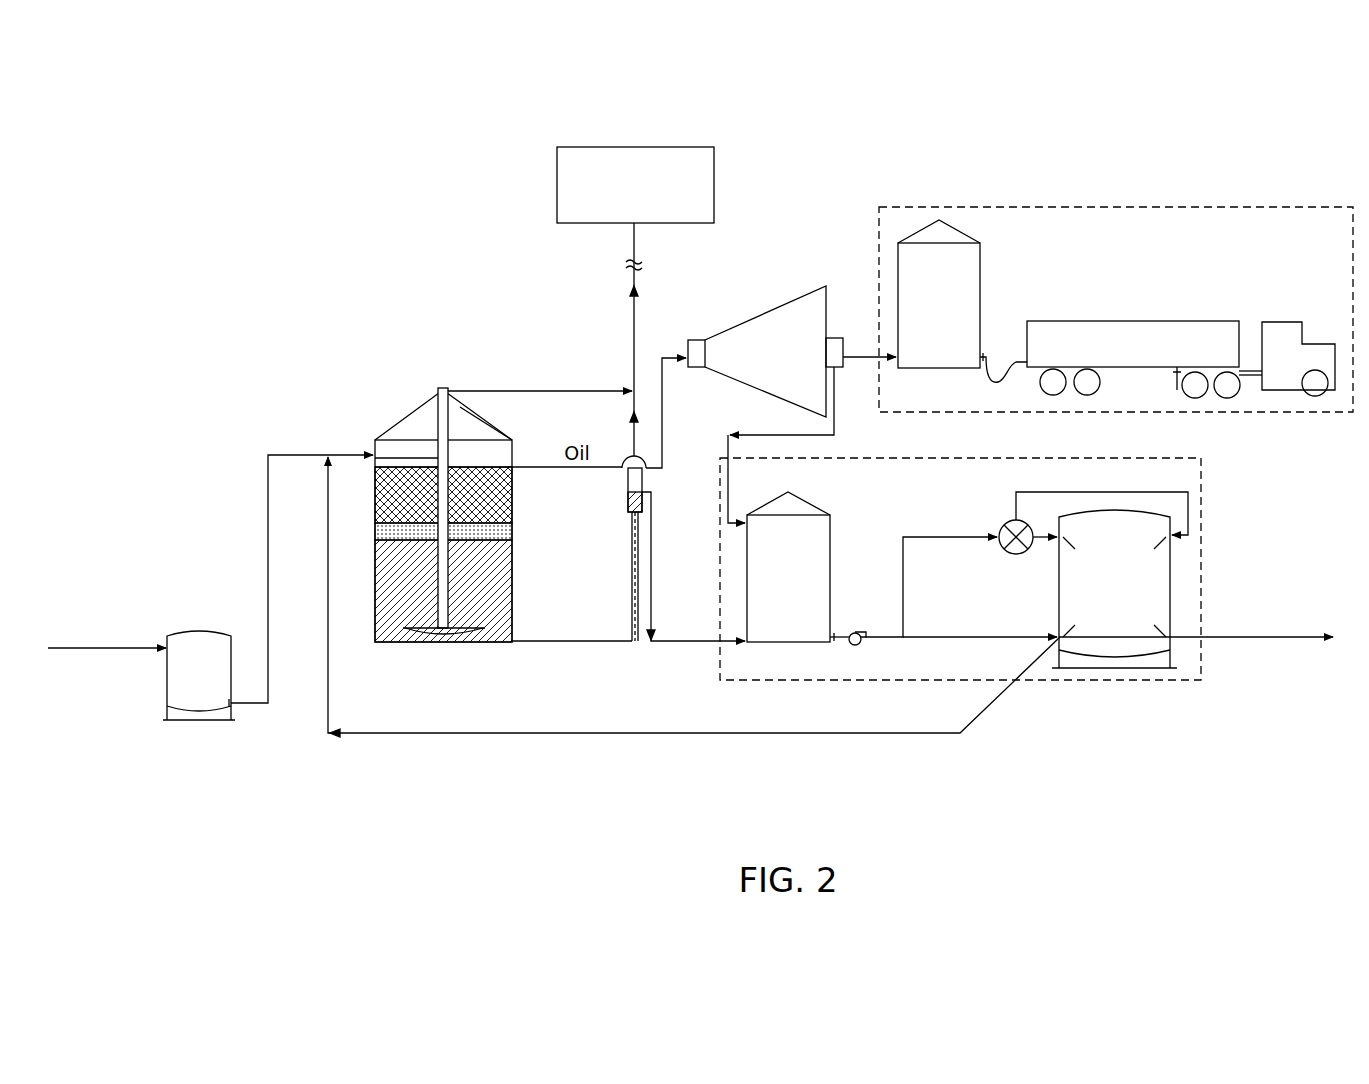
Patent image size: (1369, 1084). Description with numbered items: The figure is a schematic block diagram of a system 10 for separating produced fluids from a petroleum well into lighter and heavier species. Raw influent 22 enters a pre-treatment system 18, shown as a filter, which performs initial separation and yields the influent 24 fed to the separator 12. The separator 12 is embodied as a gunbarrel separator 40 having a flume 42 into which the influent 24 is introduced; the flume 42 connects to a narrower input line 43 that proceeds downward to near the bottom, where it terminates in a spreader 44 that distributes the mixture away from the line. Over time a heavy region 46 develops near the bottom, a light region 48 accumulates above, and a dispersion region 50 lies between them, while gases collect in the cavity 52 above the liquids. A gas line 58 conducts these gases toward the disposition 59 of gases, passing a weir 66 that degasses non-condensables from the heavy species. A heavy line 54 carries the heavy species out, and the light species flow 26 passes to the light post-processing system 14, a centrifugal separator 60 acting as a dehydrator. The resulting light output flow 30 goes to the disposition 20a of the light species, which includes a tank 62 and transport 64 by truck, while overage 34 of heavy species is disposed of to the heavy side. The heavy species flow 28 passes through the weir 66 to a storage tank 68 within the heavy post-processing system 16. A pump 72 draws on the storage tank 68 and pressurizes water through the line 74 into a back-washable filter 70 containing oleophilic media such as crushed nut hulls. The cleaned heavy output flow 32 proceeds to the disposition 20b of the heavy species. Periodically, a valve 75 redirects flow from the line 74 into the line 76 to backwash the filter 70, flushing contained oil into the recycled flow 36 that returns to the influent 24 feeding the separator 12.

The system 10 is at (205, 206).
The separator 12 is at (432, 463).
The light post-processing system 14 is at (765, 316).
The heavy post-processing system 16 is at (1004, 553).
The pre-treatment system 18 is at (140, 524).
The disposition of the light species 20a is at (1093, 276).
The disposition of the heavy species 20b is at (1272, 550).
The raw influent 22 is at (113, 652).
The influent 24 is at (212, 646).
The light species flow 26 is at (664, 354).
The heavy species flow 28 is at (677, 638).
The light output flow 30 is at (857, 362).
The heavy output flow 32 is at (1268, 641).
The overage 34 is at (785, 433).
The recycled flow 36 is at (567, 735).
The separator 40 is at (416, 405).
The flume 42 is at (443, 387).
The input line 43 is at (438, 616).
The spreader 44 is at (437, 632).
The heavy region 46 is at (380, 585).
The light region 48 is at (378, 500).
The dispersion region 50 is at (378, 535).
The cavity 52 is at (470, 413).
The heavy line 54 is at (562, 644).
The gas line 58 is at (490, 389).
The disposition of gases 59 is at (623, 216).
The centrifugal separator 60 is at (784, 336).
The tank 62 is at (926, 352).
The transport 64 is at (1114, 347).
The weir 66 is at (648, 482).
The storage tank 68 is at (775, 632).
The filter 70 is at (1101, 541).
The pump 72 is at (857, 632).
The line 74 is at (903, 560).
The valve 75 is at (1016, 555).
The line 76 is at (1016, 500).